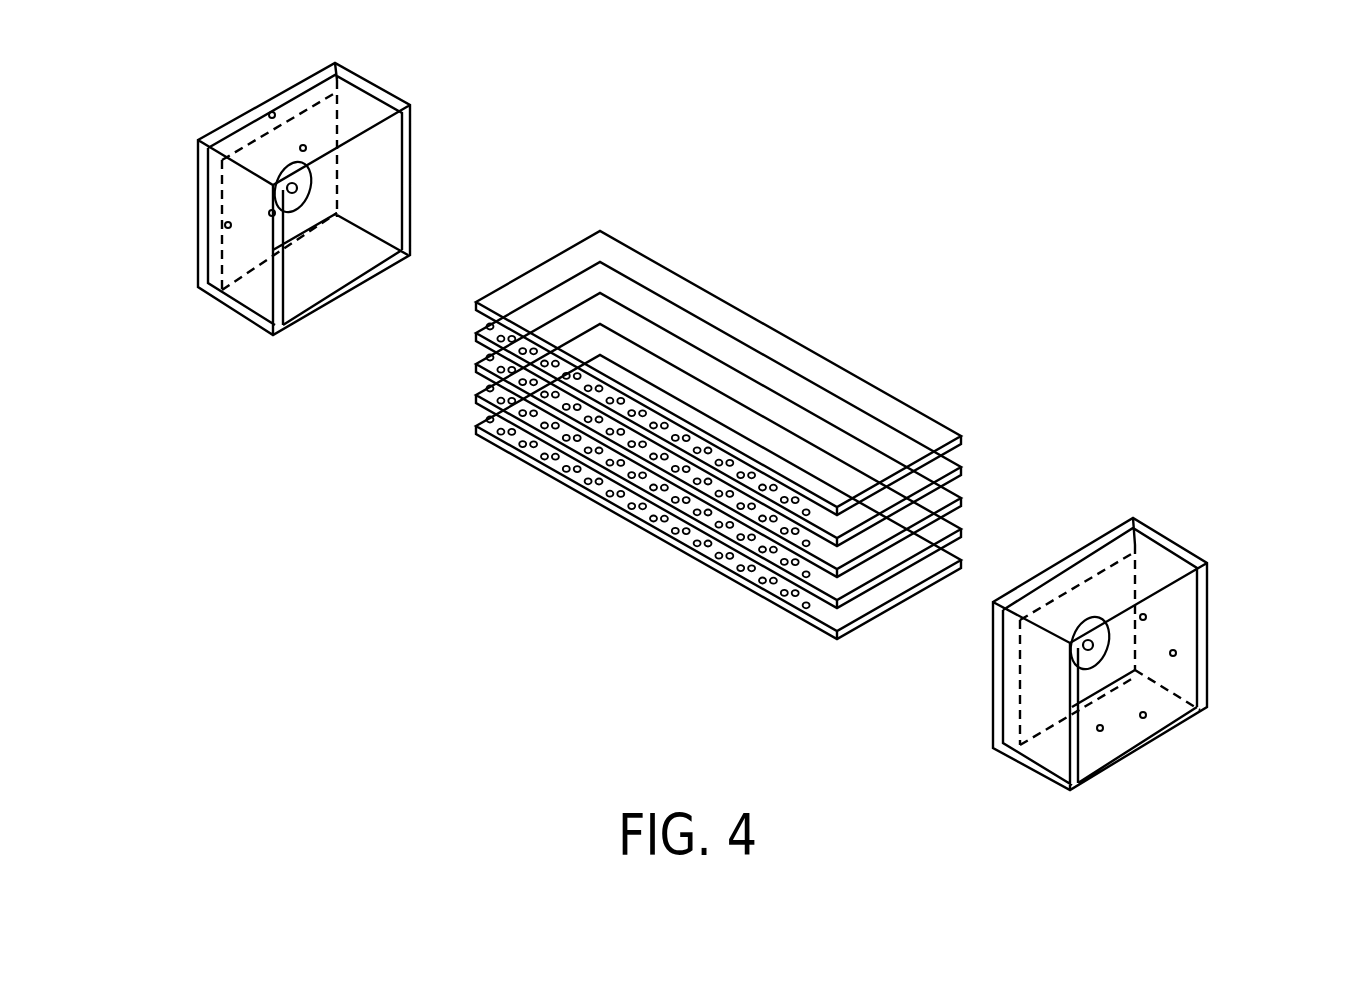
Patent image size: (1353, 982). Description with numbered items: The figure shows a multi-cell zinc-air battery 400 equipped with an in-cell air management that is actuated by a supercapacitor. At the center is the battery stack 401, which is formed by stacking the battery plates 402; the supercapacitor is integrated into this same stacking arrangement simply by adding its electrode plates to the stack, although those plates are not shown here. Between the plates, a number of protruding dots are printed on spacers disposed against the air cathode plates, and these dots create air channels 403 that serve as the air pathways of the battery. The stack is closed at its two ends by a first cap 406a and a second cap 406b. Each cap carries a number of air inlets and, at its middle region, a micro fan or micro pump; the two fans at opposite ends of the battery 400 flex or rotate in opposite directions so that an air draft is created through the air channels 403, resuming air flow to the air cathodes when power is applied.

The multi-cell zinc-air battery 400 is at (800, 178).
The battery stack 401 is at (464, 302).
The battery plates 402 is at (764, 350).
The air channels 403 is at (616, 501).
The first cap 406a is at (197, 211).
The second cap 406b is at (1210, 670).